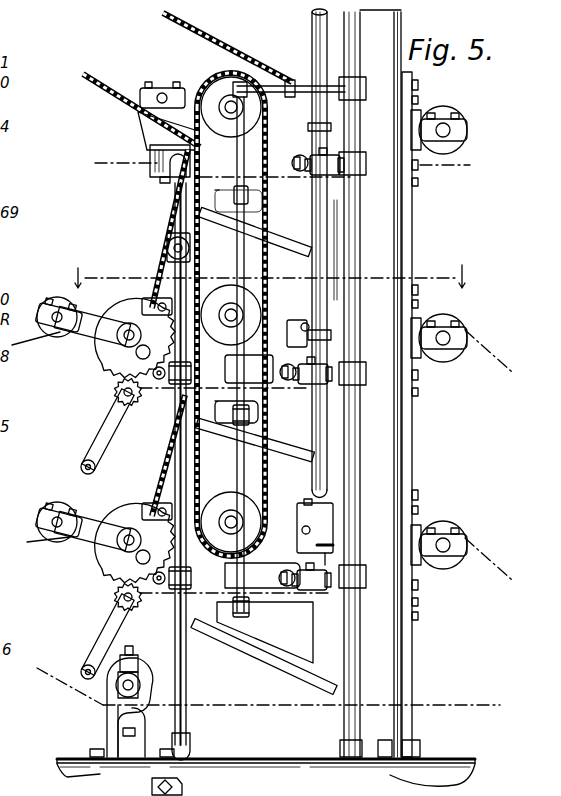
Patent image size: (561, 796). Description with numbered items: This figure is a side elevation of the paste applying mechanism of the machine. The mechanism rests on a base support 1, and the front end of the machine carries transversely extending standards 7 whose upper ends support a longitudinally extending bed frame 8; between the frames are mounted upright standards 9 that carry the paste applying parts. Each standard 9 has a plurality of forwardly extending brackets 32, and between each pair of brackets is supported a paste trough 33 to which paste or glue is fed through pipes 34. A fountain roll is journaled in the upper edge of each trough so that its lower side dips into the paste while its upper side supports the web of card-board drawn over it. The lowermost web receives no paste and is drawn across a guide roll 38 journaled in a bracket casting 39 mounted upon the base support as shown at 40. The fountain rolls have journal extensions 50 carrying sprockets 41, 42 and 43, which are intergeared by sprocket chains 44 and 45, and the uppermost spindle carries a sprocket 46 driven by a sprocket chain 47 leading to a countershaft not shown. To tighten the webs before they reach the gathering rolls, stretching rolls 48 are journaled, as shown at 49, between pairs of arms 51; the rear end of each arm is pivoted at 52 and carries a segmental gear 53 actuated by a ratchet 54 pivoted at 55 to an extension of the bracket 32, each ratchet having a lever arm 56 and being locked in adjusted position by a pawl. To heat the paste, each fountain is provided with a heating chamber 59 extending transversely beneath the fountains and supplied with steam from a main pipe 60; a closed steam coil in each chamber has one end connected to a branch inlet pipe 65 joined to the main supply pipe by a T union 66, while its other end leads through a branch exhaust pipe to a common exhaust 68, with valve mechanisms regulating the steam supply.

The base support 1 is at (445, 760).
The standards 7 is at (268, 441).
The bed frame 8 is at (299, 343).
The upright standards 9 is at (396, 222).
The brackets 32 is at (283, 243).
The paste trough 33 is at (142, 132).
The pipes 34 is at (312, 20).
The guide roll 38 is at (140, 680).
The bracket casting 39 is at (106, 706).
The mounting of bracket casting 40 is at (90, 755).
The sprocket 41 is at (247, 88).
The sprocket 42 is at (262, 322).
The sprocket 43 is at (221, 508).
The sprocket chain 44 is at (262, 196).
The sprocket chain 45 is at (262, 412).
The sprocket 46 is at (205, 75).
The sprocket chain 47 is at (227, 45).
The stretching rolls 48 is at (52, 310).
The roll journal 49 is at (92, 318).
The journal extensions 50 is at (222, 100).
The arms 51 is at (92, 333).
The pivot 52 is at (122, 340).
The segmental gear 53 is at (112, 375).
The ratchet 54 is at (117, 396).
The ratchet pivot 55 is at (112, 410).
The lever arm 56 is at (100, 437).
The heating chamber 59 is at (150, 172).
The main pipe 60 is at (362, 252).
The branch inlet pipe 65 is at (300, 176).
The T union 66 is at (352, 160).
The common exhaust 68 is at (176, 205).